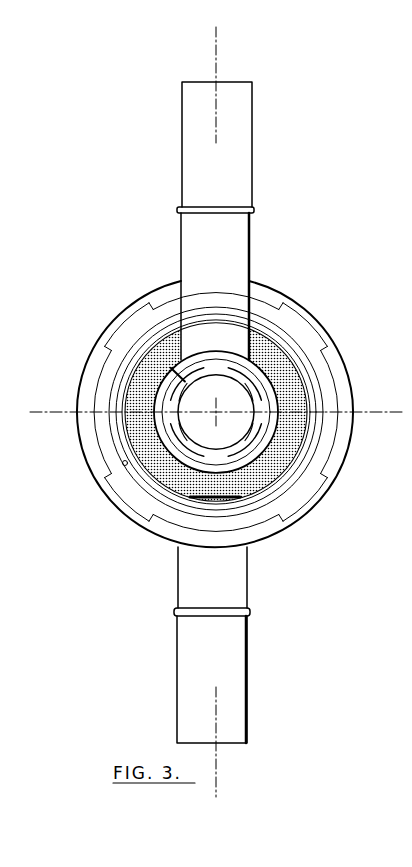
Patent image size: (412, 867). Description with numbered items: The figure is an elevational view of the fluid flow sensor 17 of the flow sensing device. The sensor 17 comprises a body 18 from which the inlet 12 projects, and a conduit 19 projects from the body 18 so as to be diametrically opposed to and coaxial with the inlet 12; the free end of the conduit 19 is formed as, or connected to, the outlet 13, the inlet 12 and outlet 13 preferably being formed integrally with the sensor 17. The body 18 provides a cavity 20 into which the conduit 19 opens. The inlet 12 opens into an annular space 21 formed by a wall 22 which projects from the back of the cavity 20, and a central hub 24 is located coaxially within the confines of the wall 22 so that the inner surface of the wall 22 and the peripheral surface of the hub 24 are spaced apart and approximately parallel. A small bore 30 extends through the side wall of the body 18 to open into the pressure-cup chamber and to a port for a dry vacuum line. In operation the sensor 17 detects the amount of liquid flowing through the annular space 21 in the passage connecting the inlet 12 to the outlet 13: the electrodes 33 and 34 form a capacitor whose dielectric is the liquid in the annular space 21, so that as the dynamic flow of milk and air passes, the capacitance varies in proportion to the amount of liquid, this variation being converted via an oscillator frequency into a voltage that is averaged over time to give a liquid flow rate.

The inlet 12 is at (228, 182).
The outlet 13 is at (227, 703).
The flow sensor 17 is at (160, 262).
The body 18 is at (271, 282).
The conduit 19 is at (190, 591).
The cavity 20 is at (260, 485).
The annular space 21 is at (252, 382).
The wall 22 is at (273, 433).
The central hub 24 is at (193, 440).
The small bore 30 is at (122, 463).
The electrode 33 is at (167, 370).
The electrode 34 is at (276, 377).